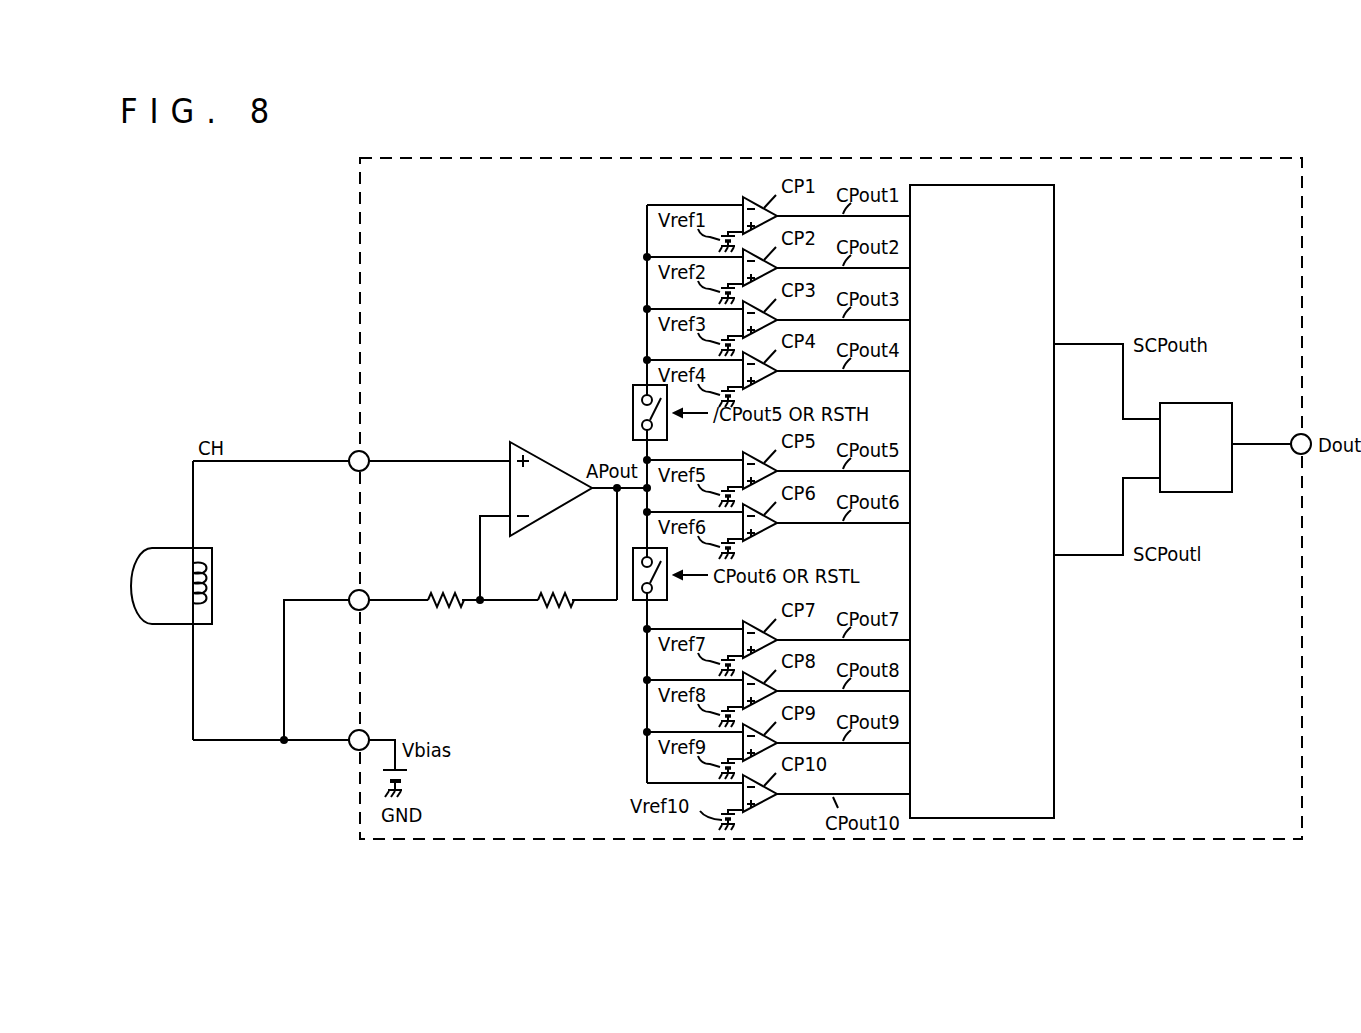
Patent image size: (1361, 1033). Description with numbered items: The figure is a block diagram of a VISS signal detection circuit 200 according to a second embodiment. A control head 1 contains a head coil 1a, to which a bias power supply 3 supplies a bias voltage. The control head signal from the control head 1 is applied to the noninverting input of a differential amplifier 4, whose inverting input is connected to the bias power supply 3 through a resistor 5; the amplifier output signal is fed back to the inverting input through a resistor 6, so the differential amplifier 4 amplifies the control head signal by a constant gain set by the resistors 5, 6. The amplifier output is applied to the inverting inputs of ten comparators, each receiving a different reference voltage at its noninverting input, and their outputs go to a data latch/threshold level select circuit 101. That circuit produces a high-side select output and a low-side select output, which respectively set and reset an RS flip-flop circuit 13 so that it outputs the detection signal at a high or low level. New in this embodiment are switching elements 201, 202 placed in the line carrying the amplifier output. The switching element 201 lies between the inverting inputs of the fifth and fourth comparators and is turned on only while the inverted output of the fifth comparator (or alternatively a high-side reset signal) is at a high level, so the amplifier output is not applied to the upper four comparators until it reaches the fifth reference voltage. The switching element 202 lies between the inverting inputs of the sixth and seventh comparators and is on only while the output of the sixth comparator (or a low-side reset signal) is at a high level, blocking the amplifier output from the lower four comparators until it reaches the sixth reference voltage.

The control head 1 is at (163, 548).
The head coil 1a is at (178, 602).
The bias power supply 3 is at (410, 777).
The differential amplifier 4 is at (543, 455).
The resistor 5 is at (443, 606).
The resistor 6 is at (555, 608).
The RS flip-flop circuit 13 is at (1217, 402).
The data latch/threshold level select circuit 101 is at (1055, 233).
The VISS signal detection circuit 200 is at (1211, 158).
The switching element 201 is at (632, 393).
The switching element 202 is at (635, 606).